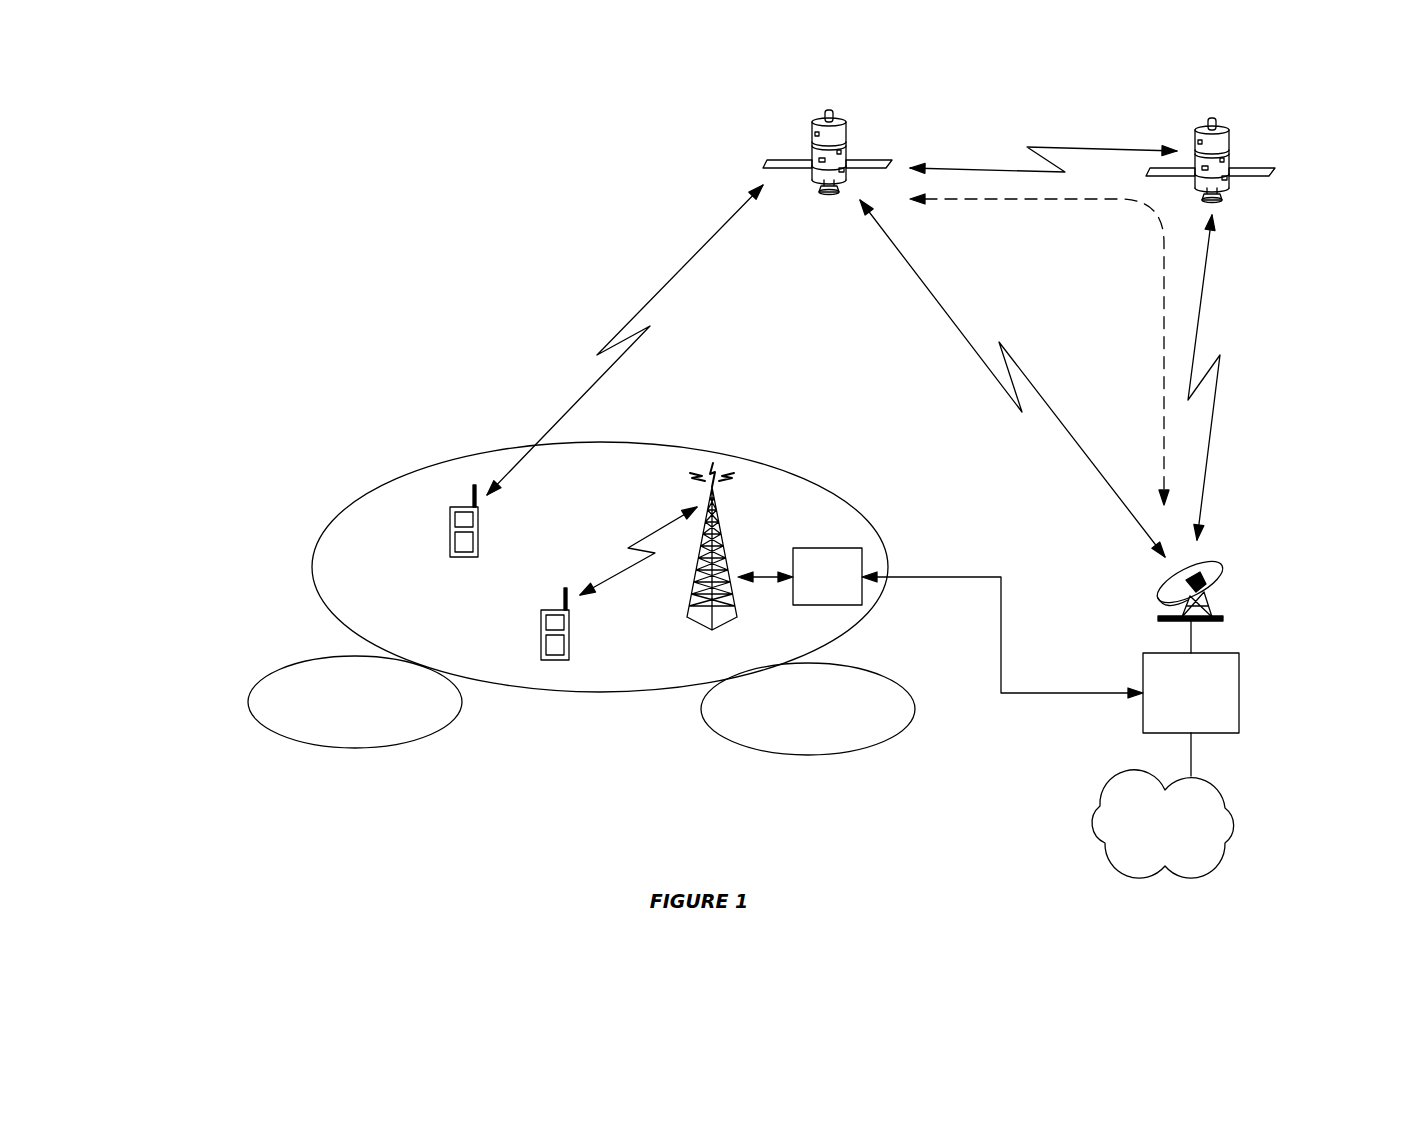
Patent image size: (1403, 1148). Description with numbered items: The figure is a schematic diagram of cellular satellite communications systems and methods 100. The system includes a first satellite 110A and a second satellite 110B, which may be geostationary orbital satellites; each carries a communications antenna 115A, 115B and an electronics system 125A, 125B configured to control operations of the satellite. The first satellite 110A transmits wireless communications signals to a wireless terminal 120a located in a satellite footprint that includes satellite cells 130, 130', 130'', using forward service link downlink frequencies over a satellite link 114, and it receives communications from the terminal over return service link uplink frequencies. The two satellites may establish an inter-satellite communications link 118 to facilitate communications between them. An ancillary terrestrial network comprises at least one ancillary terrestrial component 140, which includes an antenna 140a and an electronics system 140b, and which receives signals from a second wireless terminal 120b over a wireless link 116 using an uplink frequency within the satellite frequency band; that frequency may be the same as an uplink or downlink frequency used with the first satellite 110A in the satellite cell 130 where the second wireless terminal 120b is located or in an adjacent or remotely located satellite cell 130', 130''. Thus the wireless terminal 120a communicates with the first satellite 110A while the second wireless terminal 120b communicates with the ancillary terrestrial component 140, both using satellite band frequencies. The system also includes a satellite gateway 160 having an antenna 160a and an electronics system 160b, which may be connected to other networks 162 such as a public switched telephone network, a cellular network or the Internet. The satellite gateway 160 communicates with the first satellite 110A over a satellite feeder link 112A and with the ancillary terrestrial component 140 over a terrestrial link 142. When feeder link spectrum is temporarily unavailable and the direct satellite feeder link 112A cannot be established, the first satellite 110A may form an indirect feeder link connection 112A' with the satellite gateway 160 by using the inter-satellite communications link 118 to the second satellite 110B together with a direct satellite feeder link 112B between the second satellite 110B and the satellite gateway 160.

The cellular satellite communications systems and methods 100 is at (585, 238).
The first satellite 110A is at (847, 122).
The second satellite 110B is at (1228, 132).
The electronics system 125A is at (812, 140).
The electronics system 125B is at (1230, 160).
The communications antenna 115A is at (882, 160).
The communications antenna 115B is at (1247, 177).
The inter-satellite communications link 118 is at (1045, 147).
The satellite feeder link 112A is at (1012, 378).
The indirect feeder link connection 112A' is at (1039, 349).
The direct satellite feeder link 112B is at (1199, 325).
The satellite link 114 is at (631, 318).
The wireless link 116 is at (642, 540).
The wireless terminal 120a is at (449, 531).
The second wireless terminal 120b is at (540, 635).
The satellite cell 130 is at (600, 567).
The satellite cell 130' is at (808, 709).
The satellite cell 130'' is at (355, 702).
The ancillary terrestrial component 140 is at (798, 546).
The antenna 140a is at (721, 538).
The electronics system 140b is at (827, 576).
The terrestrial link 142 is at (1013, 690).
The satellite gateway 160 is at (1247, 632).
The antenna 160a is at (1210, 562).
The electronics system 160b is at (1191, 693).
The other networks 162 is at (1163, 805).